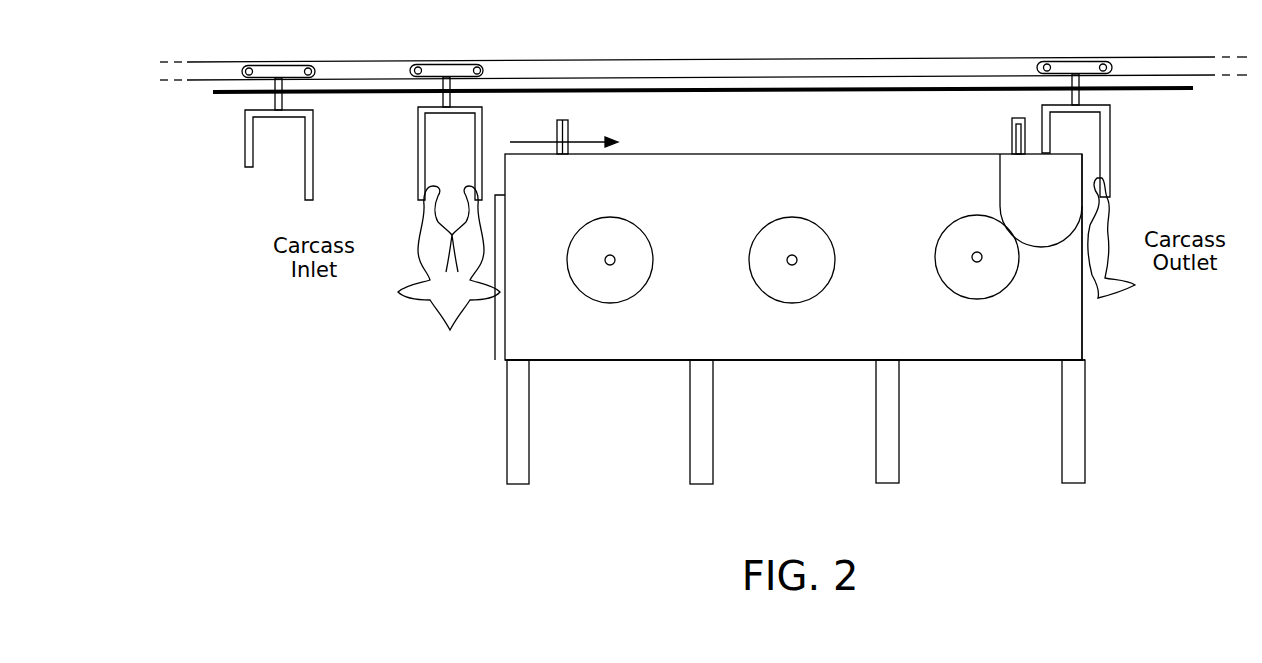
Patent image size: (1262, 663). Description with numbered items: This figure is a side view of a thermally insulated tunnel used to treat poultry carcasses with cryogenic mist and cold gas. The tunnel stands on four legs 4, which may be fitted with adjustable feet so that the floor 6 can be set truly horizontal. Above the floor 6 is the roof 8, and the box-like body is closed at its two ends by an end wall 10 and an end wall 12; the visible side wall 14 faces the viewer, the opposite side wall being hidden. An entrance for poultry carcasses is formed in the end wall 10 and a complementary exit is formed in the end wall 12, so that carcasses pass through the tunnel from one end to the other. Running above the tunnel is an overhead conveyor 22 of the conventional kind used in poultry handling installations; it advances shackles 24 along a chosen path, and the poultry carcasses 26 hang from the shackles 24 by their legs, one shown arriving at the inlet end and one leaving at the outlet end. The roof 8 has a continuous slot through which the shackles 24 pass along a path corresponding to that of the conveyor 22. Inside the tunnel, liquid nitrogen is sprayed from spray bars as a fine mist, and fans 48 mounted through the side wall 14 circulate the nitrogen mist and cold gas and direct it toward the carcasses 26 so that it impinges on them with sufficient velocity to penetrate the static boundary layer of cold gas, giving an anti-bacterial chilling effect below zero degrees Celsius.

The overhead conveyor 22 is at (719, 71).
The shackles 24 is at (418, 152).
The poultry carcasses 26 is at (432, 263).
The roof 8 is at (748, 154).
The fans 48 is at (610, 217).
The end wall 10 is at (495, 344).
The end wall 12 is at (1086, 350).
The side wall 14 is at (787, 340).
The floor 6 is at (616, 362).
The legs 4 is at (519, 476).